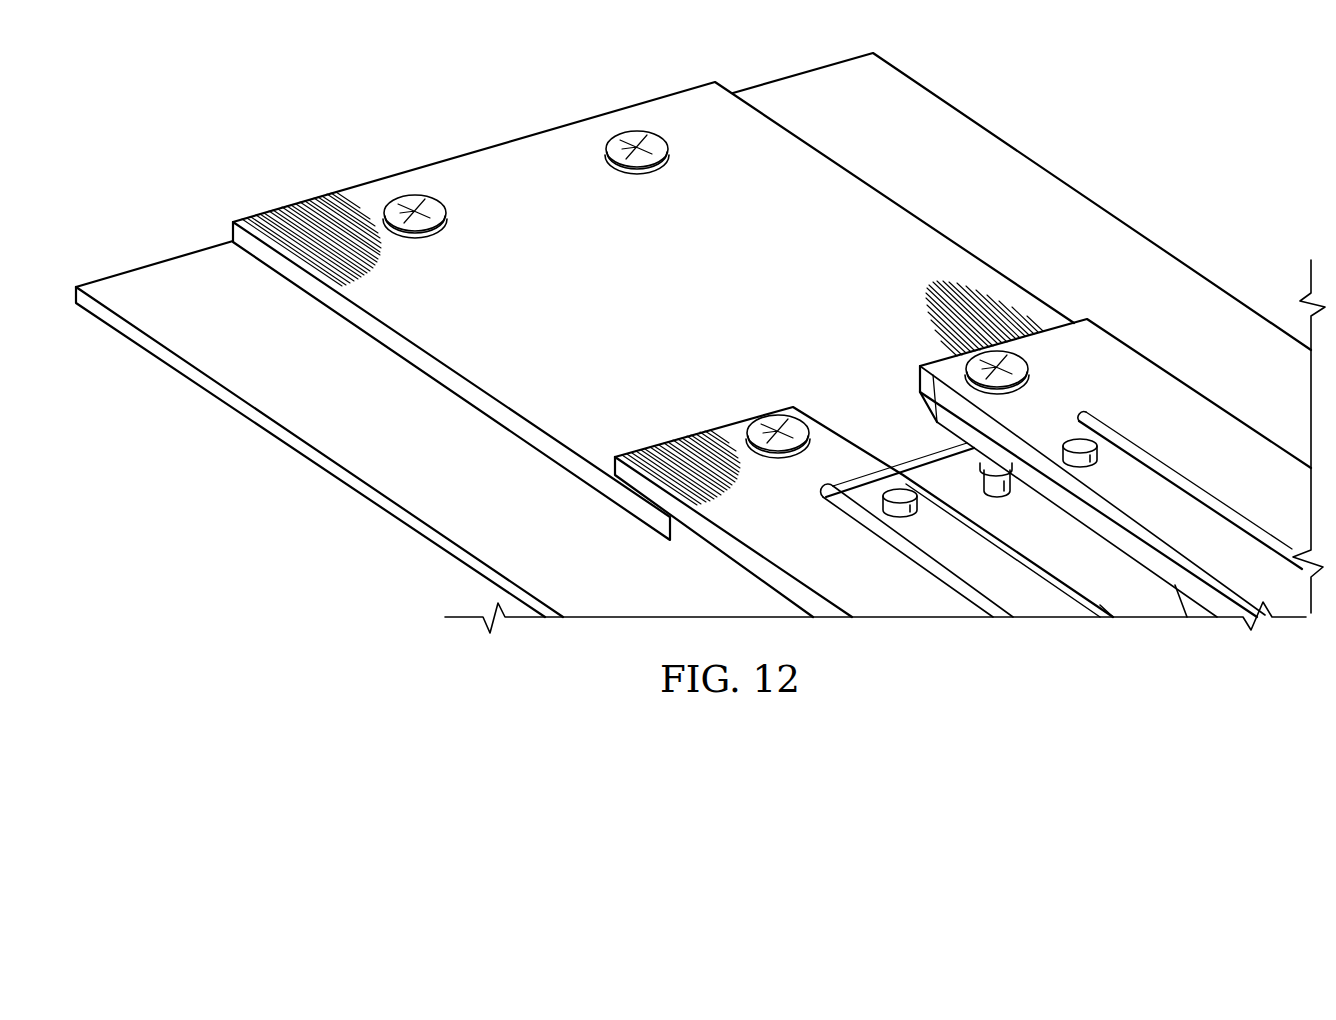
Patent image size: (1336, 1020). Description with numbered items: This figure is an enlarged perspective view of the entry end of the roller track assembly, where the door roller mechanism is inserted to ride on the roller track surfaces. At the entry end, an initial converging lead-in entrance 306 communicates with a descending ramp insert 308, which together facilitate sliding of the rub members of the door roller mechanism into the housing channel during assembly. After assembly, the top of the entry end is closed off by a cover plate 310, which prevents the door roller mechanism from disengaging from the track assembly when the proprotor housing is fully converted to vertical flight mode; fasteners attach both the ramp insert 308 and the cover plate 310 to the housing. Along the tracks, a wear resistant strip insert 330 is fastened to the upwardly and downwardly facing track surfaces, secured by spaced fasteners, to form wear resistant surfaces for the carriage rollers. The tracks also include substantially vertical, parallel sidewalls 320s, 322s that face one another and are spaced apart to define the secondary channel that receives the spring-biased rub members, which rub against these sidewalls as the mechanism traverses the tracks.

The cover plate 310 is at (492, 156).
The converging lead-in entrance 306 is at (813, 410).
The descending ramp insert 308 is at (897, 443).
The wear resistant strip insert 330 is at (942, 550).
The sidewall of second track 322s is at (1100, 610).
The sidewall of first track 320s is at (1187, 577).